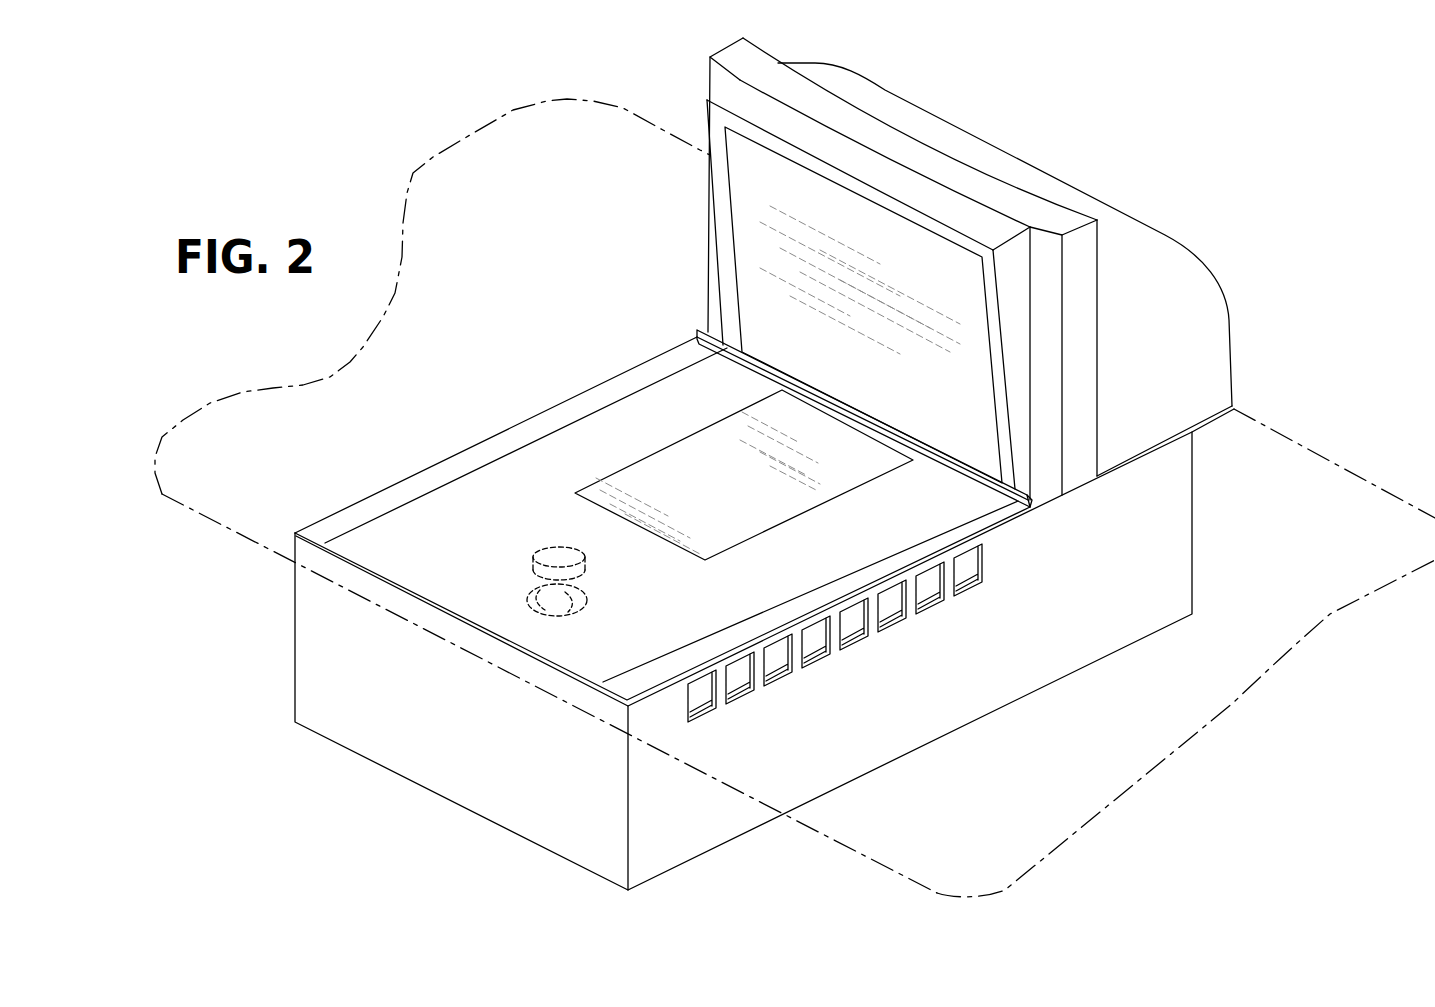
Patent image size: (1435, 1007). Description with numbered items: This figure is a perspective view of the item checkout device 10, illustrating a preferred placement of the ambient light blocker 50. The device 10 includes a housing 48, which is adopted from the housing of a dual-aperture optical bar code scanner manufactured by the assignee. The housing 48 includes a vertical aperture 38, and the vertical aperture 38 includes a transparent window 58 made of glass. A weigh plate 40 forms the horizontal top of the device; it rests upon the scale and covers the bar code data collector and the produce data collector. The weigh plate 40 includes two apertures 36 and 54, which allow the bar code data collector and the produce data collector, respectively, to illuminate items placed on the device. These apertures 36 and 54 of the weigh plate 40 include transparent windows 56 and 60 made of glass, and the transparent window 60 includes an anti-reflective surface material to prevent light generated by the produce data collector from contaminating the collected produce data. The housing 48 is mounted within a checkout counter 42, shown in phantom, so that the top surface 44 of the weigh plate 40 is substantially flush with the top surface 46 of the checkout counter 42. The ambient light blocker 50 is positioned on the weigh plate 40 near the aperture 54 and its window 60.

The item checkout device 10 is at (1050, 158).
The aperture 36 is at (837, 497).
The vertical aperture 38 is at (1000, 322).
The weigh plate 40 is at (1008, 517).
The checkout counter 42 is at (1330, 455).
The top surface of weigh plate 44 is at (963, 523).
The top surface of checkout counter 46 is at (1210, 672).
The housing 48 is at (975, 688).
The ambient light blocker 50 is at (540, 549).
The aperture 54 is at (572, 602).
The transparent window 56 is at (732, 520).
The transparent window 58 is at (945, 392).
The transparent window 60 is at (533, 583).